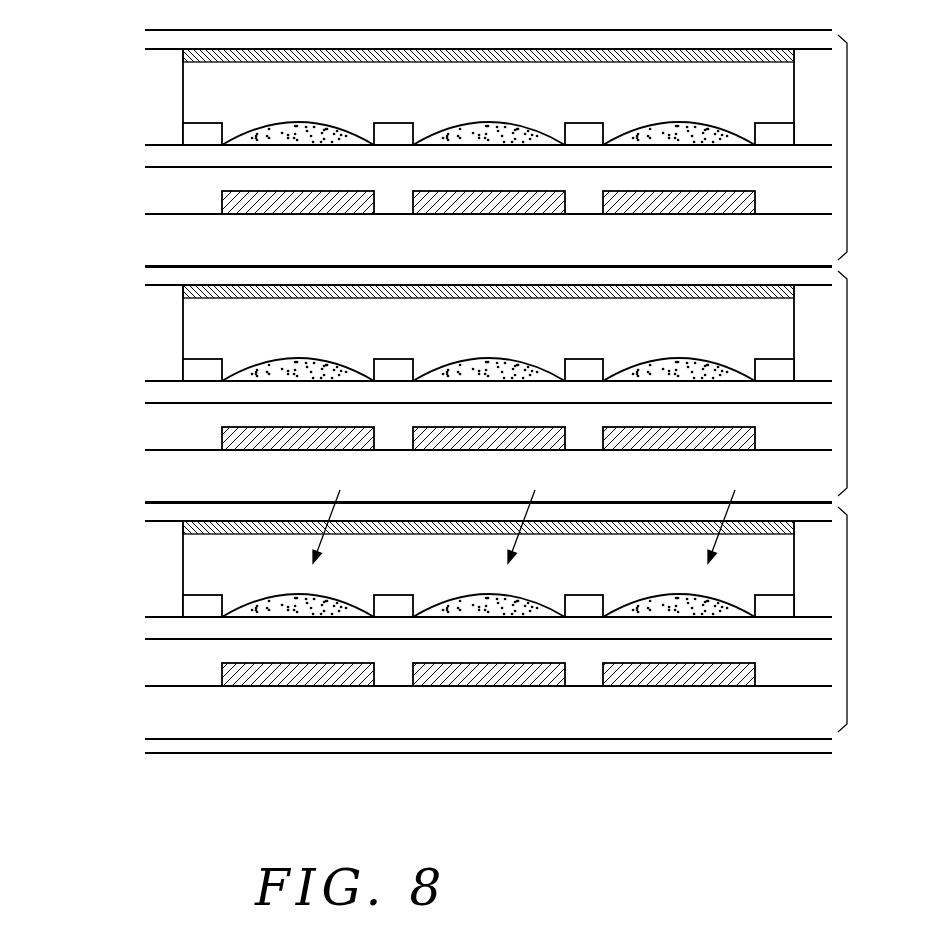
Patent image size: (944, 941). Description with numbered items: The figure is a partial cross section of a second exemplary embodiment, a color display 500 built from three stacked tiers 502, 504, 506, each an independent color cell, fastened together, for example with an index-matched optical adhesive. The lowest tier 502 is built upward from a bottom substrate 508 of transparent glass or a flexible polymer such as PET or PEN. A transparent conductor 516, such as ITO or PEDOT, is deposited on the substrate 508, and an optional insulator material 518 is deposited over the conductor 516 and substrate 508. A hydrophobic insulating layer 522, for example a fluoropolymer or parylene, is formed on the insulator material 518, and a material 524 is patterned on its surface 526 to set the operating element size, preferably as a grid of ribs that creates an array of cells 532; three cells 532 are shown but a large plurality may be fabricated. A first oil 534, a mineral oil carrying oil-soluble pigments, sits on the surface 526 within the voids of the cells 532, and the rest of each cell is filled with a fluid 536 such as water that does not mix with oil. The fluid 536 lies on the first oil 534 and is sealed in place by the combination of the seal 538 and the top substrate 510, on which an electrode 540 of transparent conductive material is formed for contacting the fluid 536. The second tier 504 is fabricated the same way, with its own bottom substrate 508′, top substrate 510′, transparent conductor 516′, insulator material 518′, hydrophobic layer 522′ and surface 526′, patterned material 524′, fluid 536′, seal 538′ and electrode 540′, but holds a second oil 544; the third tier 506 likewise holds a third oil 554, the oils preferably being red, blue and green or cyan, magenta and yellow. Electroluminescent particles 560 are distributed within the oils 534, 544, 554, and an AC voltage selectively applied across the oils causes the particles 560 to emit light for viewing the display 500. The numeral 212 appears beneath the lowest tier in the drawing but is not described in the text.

The color display 500 is at (382, 830).
The first tier 502 is at (868, 619).
The second tier 504 is at (868, 383).
The third tier 506 is at (868, 147).
The substrate 212 is at (773, 747).
The bottom substrate 508 is at (158, 720).
The top substrate 510 is at (162, 510).
The transparent conductor 516 is at (252, 675).
The insulator material 518 is at (152, 667).
The hydrophobic film layer 522 is at (152, 629).
The patterned material 524 is at (195, 609).
The surface 526 is at (295, 602).
The cells 532 is at (538, 516).
The first oil 534 is at (328, 602).
The fluid 536 is at (197, 577).
The seal 538 is at (166, 542).
The electrode 540 is at (533, 525).
The second oil 544 is at (328, 366).
The third oil 554 is at (328, 130).
The electroluminescent particles 560 is at (697, 135).
The bottom substrate 508′ is at (158, 484).
The top substrate 510′ is at (162, 274).
The transparent conductor 516′ is at (252, 439).
The insulator material 518′ is at (152, 431).
The hydrophobic film layer 522′ is at (152, 393).
The patterned material 524′ is at (195, 373).
The surface 526′ is at (295, 366).
The fluid 536′ is at (197, 341).
The seal 538′ is at (166, 306).
The electrode 540′ is at (533, 289).